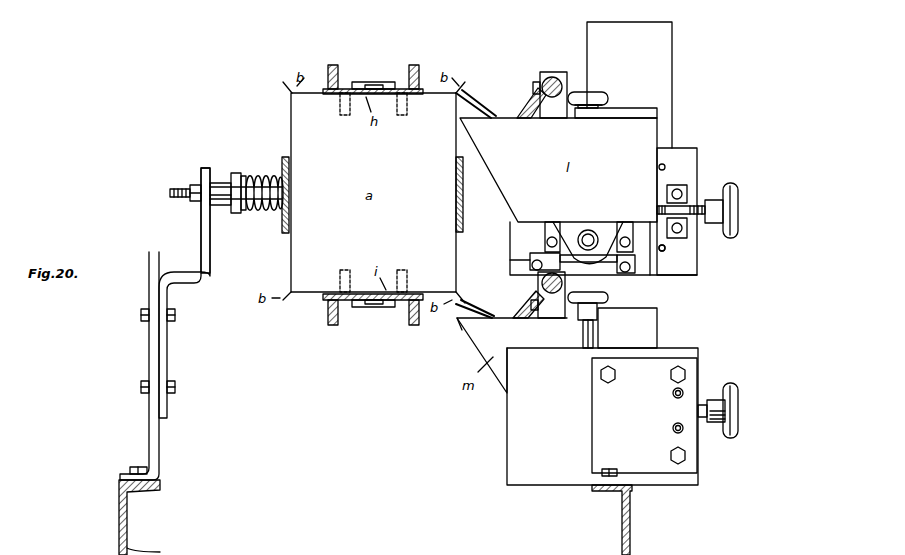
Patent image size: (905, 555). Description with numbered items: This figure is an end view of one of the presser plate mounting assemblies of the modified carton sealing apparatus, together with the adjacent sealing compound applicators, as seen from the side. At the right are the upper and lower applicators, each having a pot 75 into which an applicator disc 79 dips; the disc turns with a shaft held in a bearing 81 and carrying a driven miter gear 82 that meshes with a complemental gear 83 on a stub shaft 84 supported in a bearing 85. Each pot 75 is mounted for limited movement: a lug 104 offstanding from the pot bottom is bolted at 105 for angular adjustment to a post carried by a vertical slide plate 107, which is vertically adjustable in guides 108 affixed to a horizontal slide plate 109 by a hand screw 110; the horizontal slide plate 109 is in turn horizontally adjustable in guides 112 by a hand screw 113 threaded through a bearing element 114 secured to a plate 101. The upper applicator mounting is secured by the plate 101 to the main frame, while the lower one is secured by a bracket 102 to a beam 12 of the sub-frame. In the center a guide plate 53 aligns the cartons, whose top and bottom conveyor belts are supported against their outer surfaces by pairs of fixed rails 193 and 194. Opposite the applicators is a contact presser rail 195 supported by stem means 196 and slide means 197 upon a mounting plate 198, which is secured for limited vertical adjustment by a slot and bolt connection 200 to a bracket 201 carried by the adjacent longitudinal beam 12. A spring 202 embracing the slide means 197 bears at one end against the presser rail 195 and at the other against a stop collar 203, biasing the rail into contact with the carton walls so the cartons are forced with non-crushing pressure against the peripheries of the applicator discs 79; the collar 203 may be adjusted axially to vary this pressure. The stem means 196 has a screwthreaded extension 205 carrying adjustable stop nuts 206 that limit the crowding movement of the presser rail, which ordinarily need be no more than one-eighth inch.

The beam 12 is at (120, 517).
The guide plate 53 is at (464, 197).
The pot 75 is at (658, 133).
The applicator disc 79 is at (477, 111).
The bearing 81 is at (512, 120).
The driven miter gear 82 is at (535, 93).
The complemental gear 83 is at (556, 72).
The stub shaft 84 is at (576, 95).
The bearing 85 is at (539, 75).
The plate 101 is at (693, 158).
The bracket 102 is at (594, 415).
The lug 104 is at (573, 232).
The bolt 105 is at (590, 228).
The vertical slide plate 107 is at (600, 260).
The guides 108 is at (541, 240).
The horizontal slide plate 109 is at (645, 259).
The hand screw 110 is at (594, 331).
The guides 112 is at (632, 270).
The hand screw 113 is at (702, 205).
The bearing element 114 is at (687, 236).
The fixed rails 193 is at (410, 74).
The fixed rails 194 is at (409, 316).
The contact presser rail 195 is at (285, 158).
The stem means 196 is at (288, 193).
The slide means 197 is at (217, 207).
The mounting plate 198 is at (201, 214).
The slot and bolt connection 200 is at (174, 322).
The bracket 201 is at (148, 362).
The spring 202 is at (270, 215).
The stop collar 203 is at (245, 165).
The screwthreaded extension 205 is at (171, 191).
The stop nut 206 is at (196, 184).